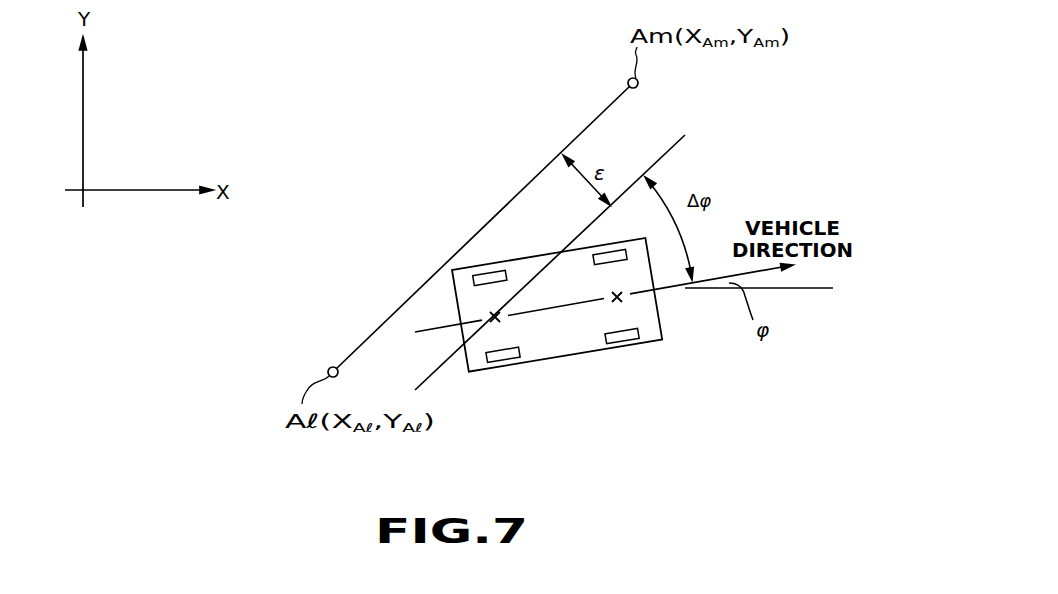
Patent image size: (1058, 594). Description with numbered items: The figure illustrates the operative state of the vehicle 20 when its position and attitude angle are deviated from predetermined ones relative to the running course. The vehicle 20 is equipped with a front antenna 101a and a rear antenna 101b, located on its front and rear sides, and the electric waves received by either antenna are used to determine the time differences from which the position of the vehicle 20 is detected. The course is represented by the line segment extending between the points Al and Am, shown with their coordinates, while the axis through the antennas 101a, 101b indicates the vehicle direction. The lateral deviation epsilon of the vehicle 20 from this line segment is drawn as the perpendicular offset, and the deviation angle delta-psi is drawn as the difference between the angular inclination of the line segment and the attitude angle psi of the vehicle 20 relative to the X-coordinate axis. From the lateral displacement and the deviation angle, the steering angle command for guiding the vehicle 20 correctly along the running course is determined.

The vehicle 20 is at (493, 372).
The front antenna 101a is at (627, 297).
The rear antenna 101b is at (503, 316).